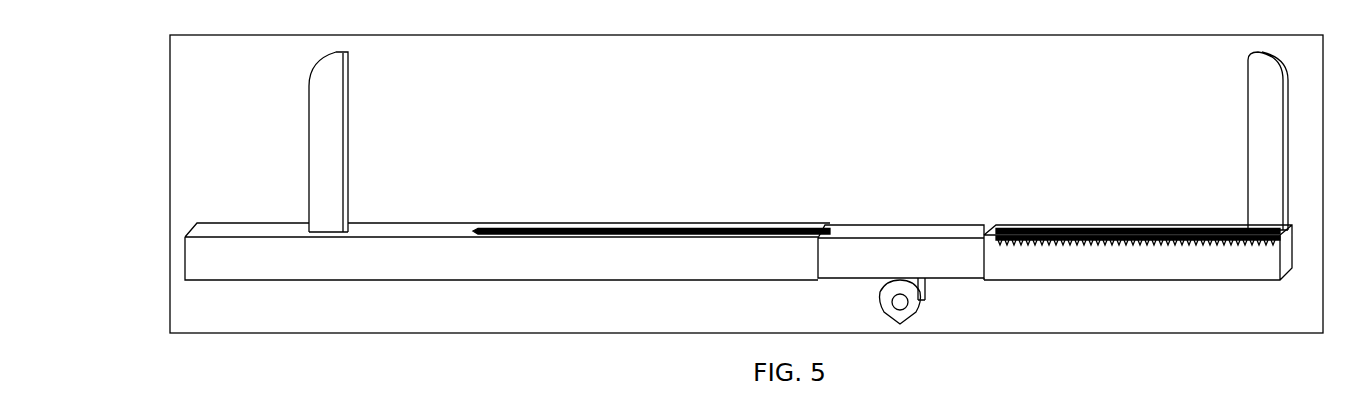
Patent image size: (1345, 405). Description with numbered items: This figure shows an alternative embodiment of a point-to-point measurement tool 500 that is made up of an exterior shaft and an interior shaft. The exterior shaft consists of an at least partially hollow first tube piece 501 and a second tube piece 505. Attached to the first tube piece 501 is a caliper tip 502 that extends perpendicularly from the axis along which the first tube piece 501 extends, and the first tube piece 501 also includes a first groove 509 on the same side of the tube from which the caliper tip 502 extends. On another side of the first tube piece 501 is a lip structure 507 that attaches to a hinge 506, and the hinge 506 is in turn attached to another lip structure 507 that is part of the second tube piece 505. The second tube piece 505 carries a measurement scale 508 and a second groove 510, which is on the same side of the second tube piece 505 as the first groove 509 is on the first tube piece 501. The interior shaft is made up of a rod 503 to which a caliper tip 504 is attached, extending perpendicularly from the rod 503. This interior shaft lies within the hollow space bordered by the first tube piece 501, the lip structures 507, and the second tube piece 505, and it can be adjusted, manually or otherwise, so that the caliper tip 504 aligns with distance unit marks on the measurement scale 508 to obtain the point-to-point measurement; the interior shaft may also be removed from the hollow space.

The point-to-point measurement tool 500 is at (721, 184).
The first tube piece 501 is at (252, 208).
The caliper tip 502 is at (287, 78).
The rod 503 is at (903, 223).
The caliper tip 504 is at (1227, 78).
The second tube piece 505 is at (1052, 210).
The hinge 506 is at (928, 308).
The lip structure 507 is at (935, 278).
The measurement scale 508 is at (1125, 232).
The first groove 509 is at (648, 231).
The second groove 510 is at (1190, 230).